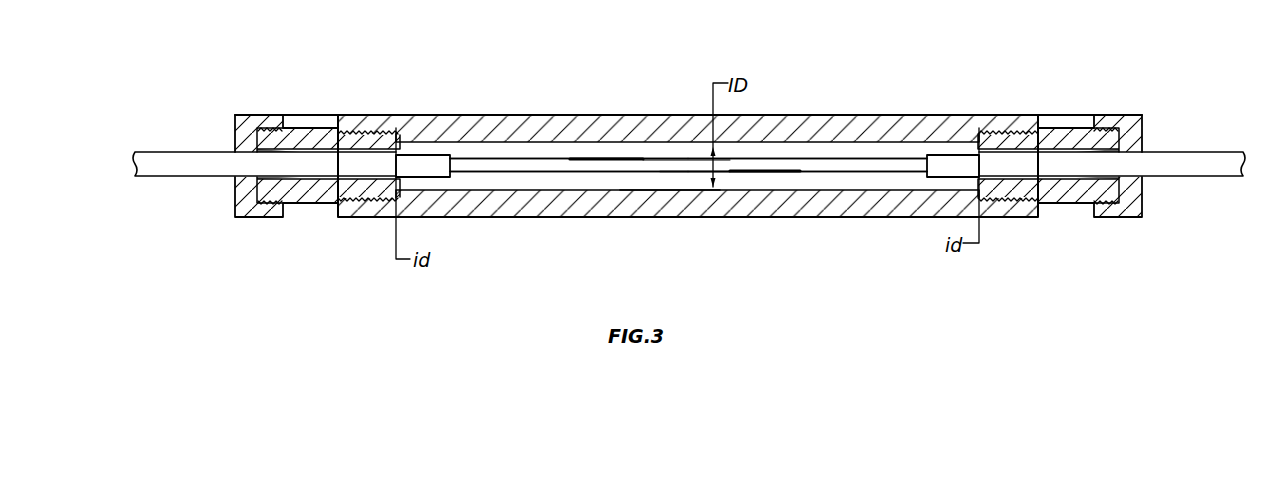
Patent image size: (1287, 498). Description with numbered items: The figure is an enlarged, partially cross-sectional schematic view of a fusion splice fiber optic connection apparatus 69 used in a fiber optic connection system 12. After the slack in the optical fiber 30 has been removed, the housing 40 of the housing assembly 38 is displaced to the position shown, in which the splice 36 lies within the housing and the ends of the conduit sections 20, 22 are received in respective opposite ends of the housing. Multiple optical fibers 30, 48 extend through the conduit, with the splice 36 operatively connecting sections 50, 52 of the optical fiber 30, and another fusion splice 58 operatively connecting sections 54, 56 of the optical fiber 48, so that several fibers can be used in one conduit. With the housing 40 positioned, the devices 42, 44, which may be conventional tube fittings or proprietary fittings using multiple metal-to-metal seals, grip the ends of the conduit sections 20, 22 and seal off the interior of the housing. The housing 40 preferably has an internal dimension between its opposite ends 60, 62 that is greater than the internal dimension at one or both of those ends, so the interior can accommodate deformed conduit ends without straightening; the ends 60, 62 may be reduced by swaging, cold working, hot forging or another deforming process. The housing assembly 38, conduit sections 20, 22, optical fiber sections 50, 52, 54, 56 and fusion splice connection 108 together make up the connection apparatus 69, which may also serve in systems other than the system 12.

The connection system 12 is at (1173, 300).
The conduit section 20 is at (157, 152).
The conduit section 22 is at (1222, 152).
The optical fiber 30 is at (663, 155).
The splice 36 is at (587, 157).
The housing assembly 38 is at (846, 113).
The housing 40 is at (669, 217).
The device 42 is at (318, 128).
The device 44 is at (1080, 128).
The optical fiber 48 is at (692, 178).
The optical fiber section 50 is at (524, 156).
The optical fiber section 52 is at (897, 157).
The optical fiber section 54 is at (567, 174).
The optical fiber section 56 is at (878, 173).
The fusion splice 58 is at (797, 173).
The housing end 60 is at (330, 205).
The housing end 62 is at (1043, 206).
The fiber optic connection apparatus 69 is at (548, 219).
The fusion splice connection 108 is at (667, 178).